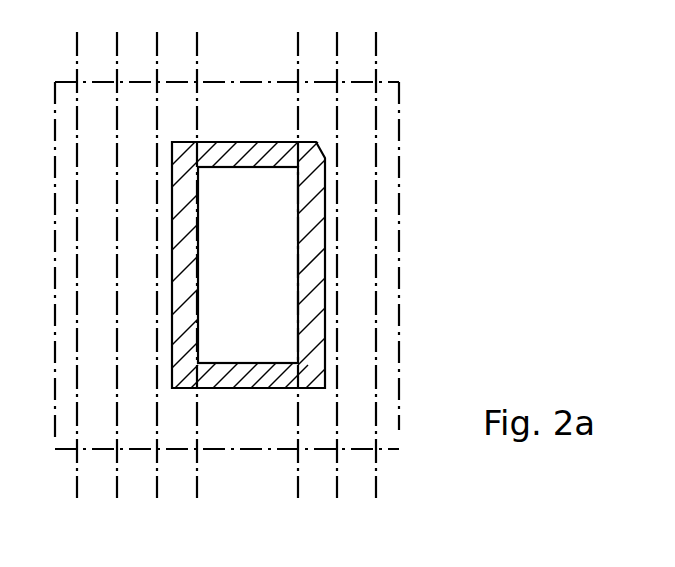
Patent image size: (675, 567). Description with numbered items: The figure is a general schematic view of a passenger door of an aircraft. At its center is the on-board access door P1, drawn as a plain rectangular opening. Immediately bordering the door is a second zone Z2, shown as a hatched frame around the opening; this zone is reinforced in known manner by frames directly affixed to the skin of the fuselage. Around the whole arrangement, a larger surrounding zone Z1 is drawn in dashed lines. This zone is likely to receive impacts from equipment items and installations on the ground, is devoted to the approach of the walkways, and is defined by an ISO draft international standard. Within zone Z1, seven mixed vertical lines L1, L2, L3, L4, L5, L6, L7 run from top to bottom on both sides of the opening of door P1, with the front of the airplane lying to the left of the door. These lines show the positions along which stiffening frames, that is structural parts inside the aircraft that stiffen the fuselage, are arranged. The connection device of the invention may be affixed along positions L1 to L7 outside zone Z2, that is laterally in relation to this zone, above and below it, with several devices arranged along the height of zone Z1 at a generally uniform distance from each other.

The surrounding zone Z1 is at (237, 80).
The second zone Z2 is at (305, 280).
The on-board access door P1 is at (257, 355).
The mixed vertical line L1 is at (76, 489).
The mixed vertical line L2 is at (116, 489).
The mixed vertical line L3 is at (156, 489).
The mixed vertical line L4 is at (196, 489).
The mixed vertical line L5 is at (297, 489).
The mixed vertical line L6 is at (336, 489).
The mixed vertical line L7 is at (375, 489).